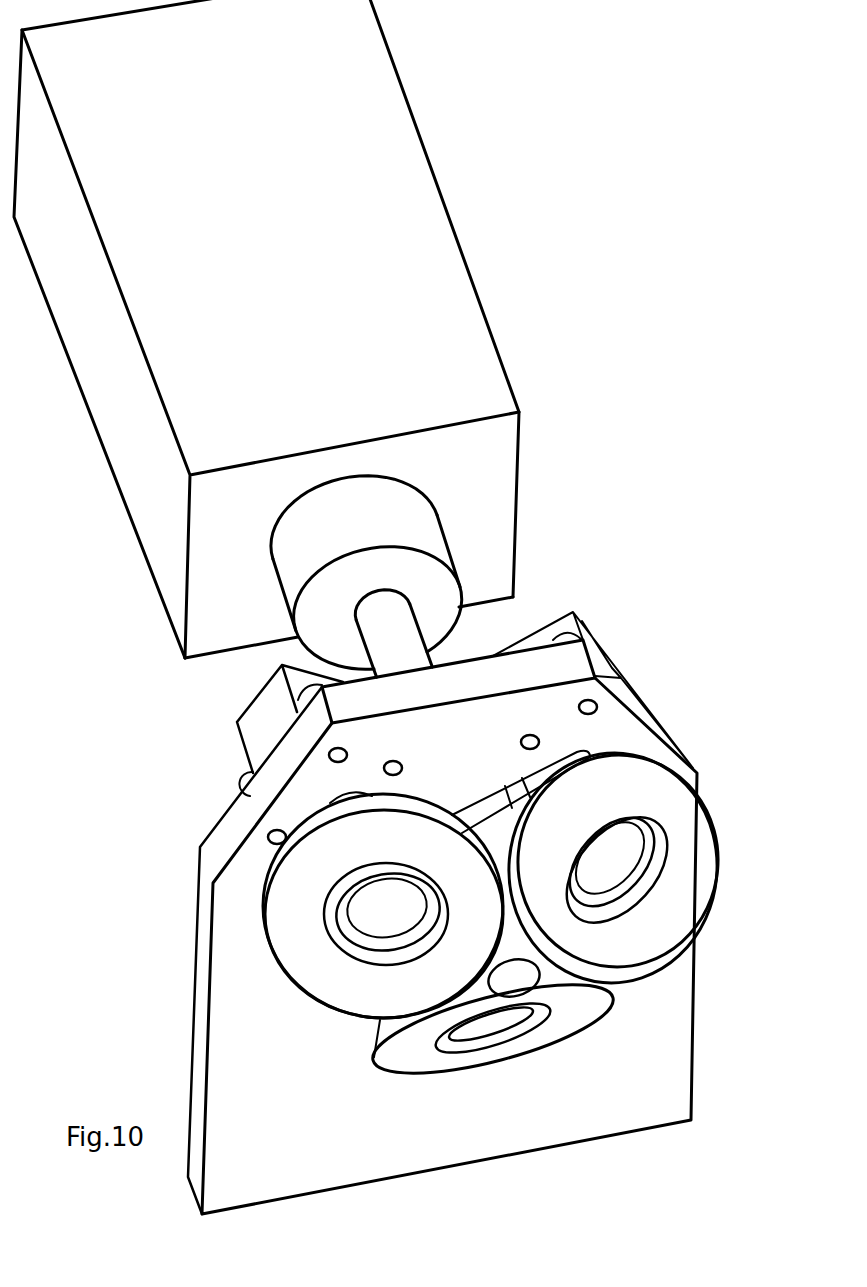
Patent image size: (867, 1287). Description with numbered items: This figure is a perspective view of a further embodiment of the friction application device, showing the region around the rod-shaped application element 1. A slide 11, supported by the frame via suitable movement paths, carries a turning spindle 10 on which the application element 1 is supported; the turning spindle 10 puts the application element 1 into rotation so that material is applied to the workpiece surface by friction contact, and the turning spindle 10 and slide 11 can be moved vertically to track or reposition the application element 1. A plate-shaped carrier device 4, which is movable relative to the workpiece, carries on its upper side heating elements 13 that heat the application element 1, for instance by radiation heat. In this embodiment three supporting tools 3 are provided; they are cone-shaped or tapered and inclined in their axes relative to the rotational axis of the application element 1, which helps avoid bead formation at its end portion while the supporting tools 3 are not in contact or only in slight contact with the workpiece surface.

The application element 1 is at (383, 642).
The supporting tools 3 is at (288, 912).
The carrier device 4 is at (228, 1037).
The turning spindle 10 is at (415, 530).
The slide 11 is at (462, 333).
The heating elements 13 is at (252, 727).